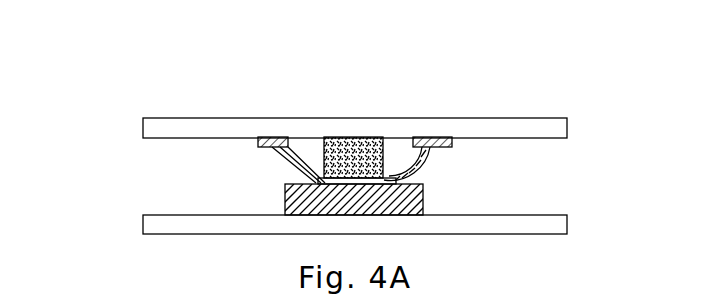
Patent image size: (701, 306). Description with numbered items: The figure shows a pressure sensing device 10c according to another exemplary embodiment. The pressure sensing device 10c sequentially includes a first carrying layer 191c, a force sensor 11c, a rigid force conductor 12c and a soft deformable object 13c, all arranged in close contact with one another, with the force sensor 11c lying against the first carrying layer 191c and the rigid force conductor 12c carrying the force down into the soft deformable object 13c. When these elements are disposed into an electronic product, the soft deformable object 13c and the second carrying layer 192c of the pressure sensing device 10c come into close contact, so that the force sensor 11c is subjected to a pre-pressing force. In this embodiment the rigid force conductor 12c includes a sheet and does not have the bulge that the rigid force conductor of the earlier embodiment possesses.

The pressure sensing device 10c is at (410, 57).
The force sensor 11c is at (385, 148).
The rigid force conductor 12c is at (424, 152).
The soft deformable object 13c is at (285, 200).
The first carrying layer 191c is at (143, 118).
The second carrying layer 192c is at (146, 215).